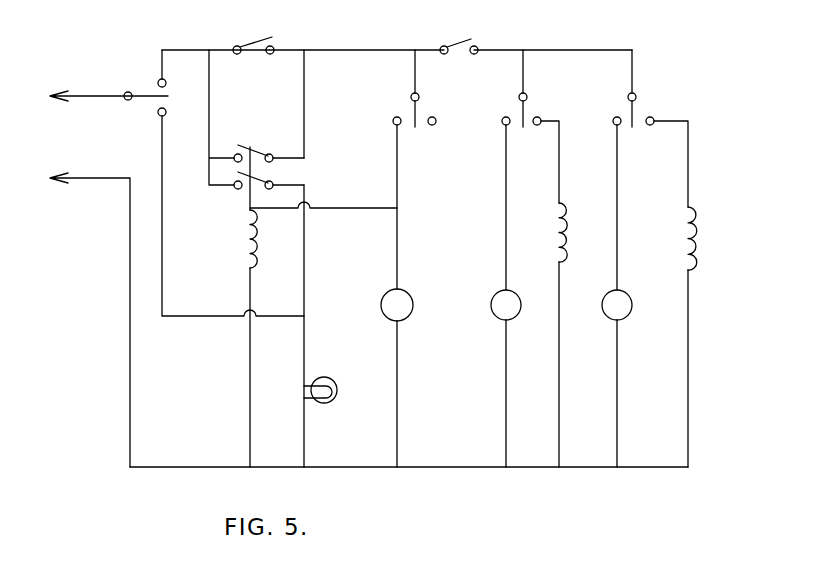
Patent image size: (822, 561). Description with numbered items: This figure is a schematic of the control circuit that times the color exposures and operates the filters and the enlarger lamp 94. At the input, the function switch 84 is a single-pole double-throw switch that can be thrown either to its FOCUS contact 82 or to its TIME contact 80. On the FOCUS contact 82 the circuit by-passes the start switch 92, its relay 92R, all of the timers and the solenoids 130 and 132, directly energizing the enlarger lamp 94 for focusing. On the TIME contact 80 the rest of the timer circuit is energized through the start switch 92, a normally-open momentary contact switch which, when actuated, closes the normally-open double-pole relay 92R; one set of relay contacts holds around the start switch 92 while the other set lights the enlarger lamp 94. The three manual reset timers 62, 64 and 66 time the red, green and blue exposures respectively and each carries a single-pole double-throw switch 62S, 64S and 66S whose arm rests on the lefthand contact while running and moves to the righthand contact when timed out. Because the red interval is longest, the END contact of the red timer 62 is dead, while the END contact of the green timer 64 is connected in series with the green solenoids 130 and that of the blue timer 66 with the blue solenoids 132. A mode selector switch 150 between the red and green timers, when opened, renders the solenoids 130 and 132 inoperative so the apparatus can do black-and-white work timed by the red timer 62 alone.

The TIME contact 80 is at (159, 80).
The FOCUS contact 82 is at (186, 114).
The function switch 84 is at (127, 100).
The start switch 92 is at (250, 36).
The double-pole relay 92R is at (245, 233).
The enlarger lamp 94 is at (352, 368).
The mode selector switch 150 is at (458, 36).
The single-pole double-throw switch 62S is at (418, 95).
The single-pole double-throw switch 64S is at (527, 95).
The single-pole double-throw switch 66S is at (636, 95).
The red timer 62 is at (405, 319).
The green timer 64 is at (514, 318).
The blue timer 66 is at (625, 318).
The green solenoids 130 is at (566, 222).
The blue solenoids 132 is at (695, 232).